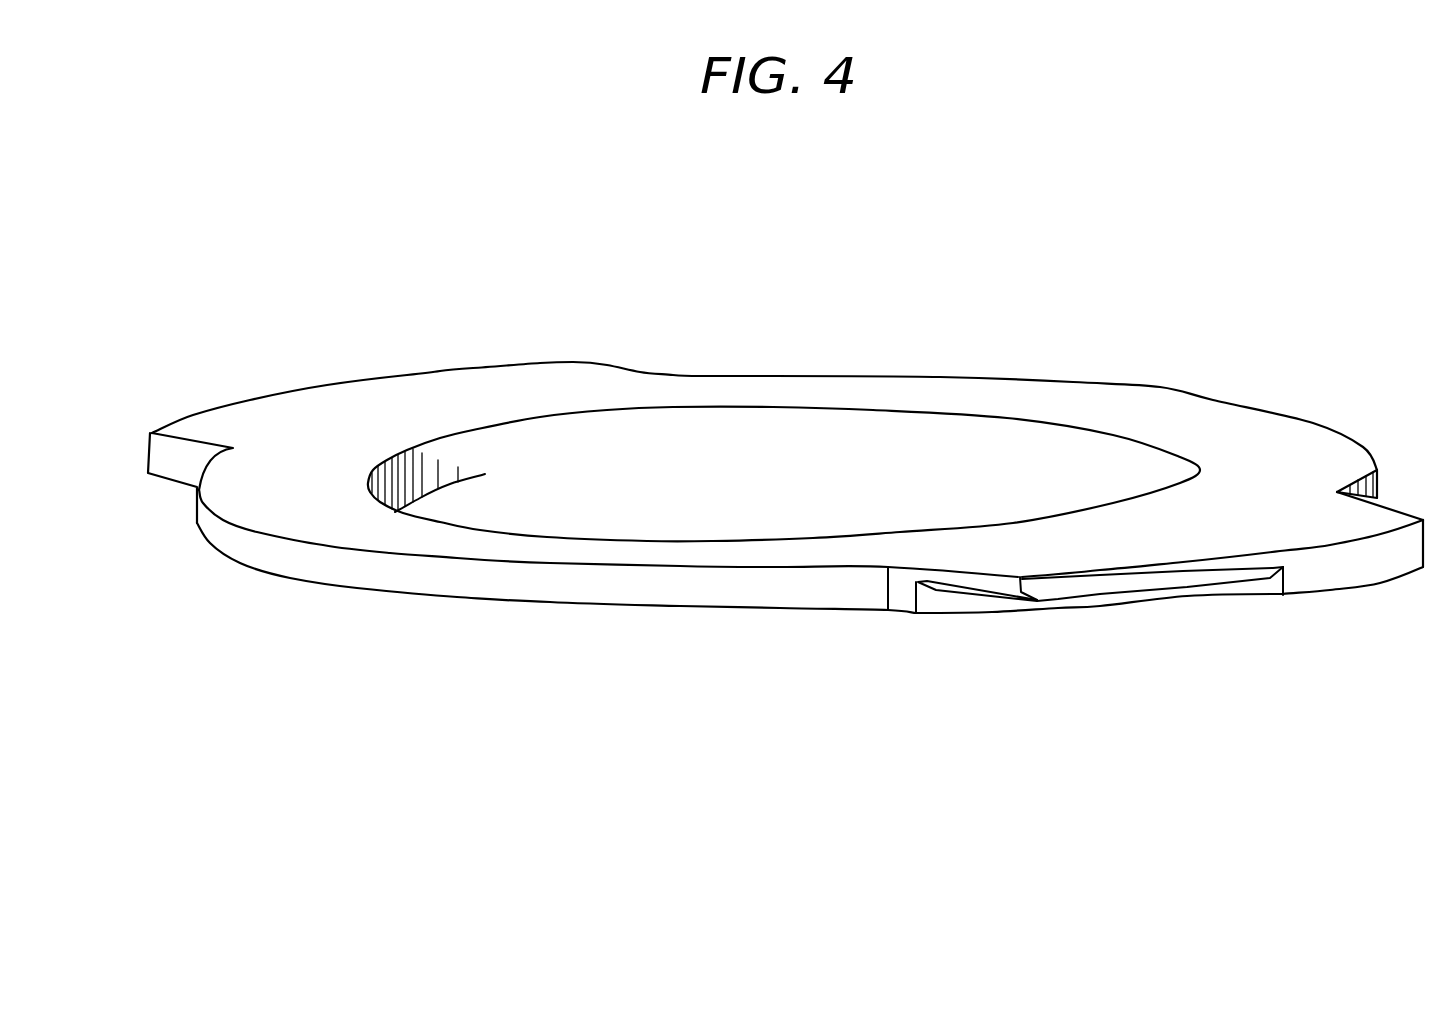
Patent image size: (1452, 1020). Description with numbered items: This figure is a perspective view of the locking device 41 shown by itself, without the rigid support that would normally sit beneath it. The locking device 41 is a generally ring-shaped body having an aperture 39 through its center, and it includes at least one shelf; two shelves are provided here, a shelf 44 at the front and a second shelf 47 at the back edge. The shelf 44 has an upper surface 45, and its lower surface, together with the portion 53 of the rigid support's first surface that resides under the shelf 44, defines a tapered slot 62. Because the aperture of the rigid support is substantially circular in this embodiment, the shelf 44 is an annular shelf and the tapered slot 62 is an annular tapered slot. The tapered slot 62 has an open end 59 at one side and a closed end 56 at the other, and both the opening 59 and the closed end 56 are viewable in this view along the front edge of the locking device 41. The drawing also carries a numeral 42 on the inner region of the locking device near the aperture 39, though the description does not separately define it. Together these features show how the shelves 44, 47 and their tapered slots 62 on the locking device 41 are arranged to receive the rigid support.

The aperture 39 is at (707, 502).
The locking device 41 is at (1082, 390).
The inner edge of opening 42 is at (770, 427).
The shelf 44 is at (1155, 550).
The upper surface 45 is at (1003, 540).
The shelf 47 is at (530, 375).
The portion of first surface 53 is at (1057, 593).
The closed end 56 is at (1268, 592).
The open end 59 is at (943, 600).
The tapered slot 62 is at (1097, 605).